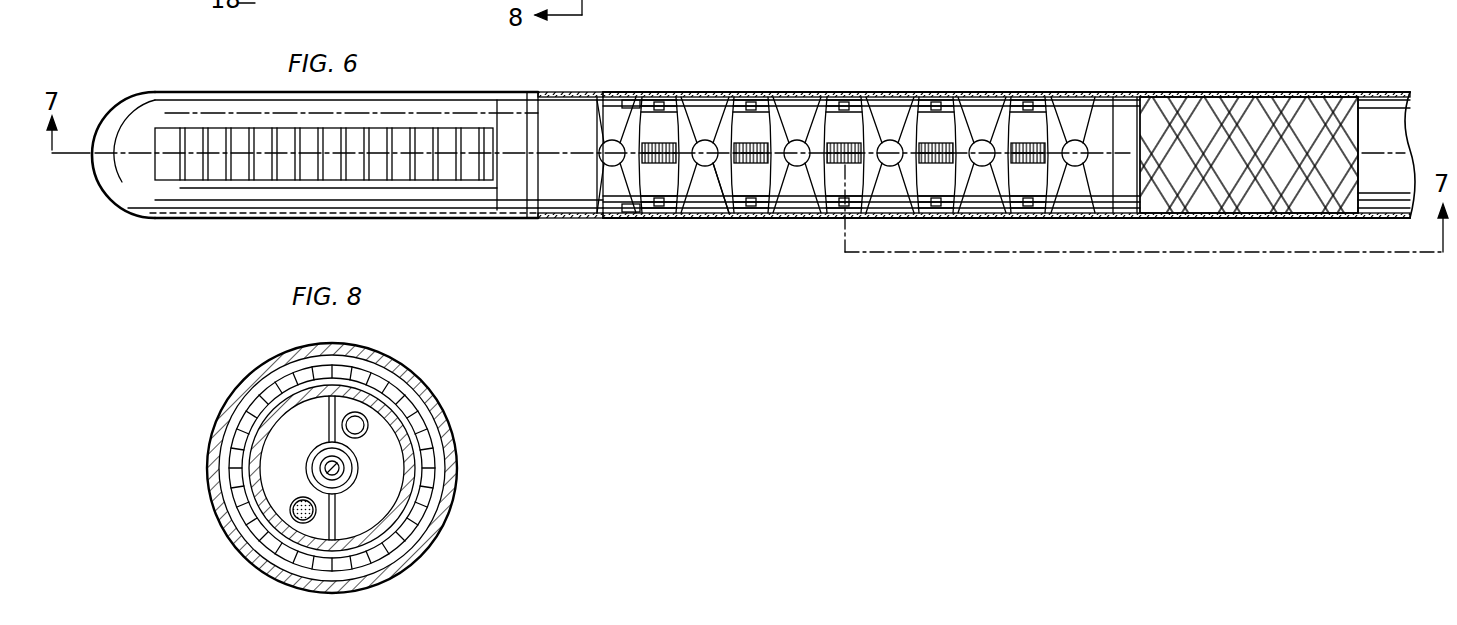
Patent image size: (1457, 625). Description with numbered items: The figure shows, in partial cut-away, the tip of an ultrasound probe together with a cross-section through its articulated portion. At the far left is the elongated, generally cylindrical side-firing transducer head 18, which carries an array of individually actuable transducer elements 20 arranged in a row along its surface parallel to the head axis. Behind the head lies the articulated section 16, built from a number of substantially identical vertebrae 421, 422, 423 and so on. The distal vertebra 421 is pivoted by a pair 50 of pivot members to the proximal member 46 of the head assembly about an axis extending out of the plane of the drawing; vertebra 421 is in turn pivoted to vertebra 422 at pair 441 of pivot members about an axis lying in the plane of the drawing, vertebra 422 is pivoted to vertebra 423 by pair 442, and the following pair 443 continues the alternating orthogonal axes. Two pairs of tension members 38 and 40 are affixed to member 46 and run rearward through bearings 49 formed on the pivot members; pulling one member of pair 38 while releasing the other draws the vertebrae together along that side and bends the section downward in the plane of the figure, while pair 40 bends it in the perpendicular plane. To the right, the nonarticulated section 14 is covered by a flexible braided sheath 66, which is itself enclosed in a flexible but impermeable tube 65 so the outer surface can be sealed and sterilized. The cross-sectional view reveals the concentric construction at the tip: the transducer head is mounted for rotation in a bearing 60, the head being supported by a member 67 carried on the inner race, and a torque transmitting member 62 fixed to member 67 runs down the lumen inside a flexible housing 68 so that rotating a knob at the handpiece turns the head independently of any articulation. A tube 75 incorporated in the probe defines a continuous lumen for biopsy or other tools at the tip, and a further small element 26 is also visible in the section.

In FIG. 6, the nonarticulated section 14 is at (1380, 226).
In FIG. 6, the articulated section 16 is at (659, 248).
In FIG. 6, the transducer head 18 is at (266, 231).
In FIG. 6, the transducer elements 20 is at (210, 128).
In FIG. 8, the cable 26 is at (294, 516).
In FIG. 6, the pair of tension members 38 is at (782, 96).
In FIG. 6, the pair of tension members 40 is at (850, 146).
In FIG. 6, the distal vertebra 421 is at (641, 96).
In FIG. 6, the vertebra 422 is at (679, 96).
In FIG. 6, the vertebra 423 is at (735, 96).
In FIG. 6, the pair of pivot members 441 is at (660, 96).
In FIG. 6, the pair of pivot members 442 is at (711, 96).
In FIG. 6, the pair of pivot members 443 is at (766, 96).
In FIG. 6, the proximal member 46 is at (549, 92).
In FIG. 8, the proximal member 46 is at (383, 364).
In FIG. 6, the bearings 49 is at (628, 100).
In FIG. 6, the pair of pivot members 50 is at (604, 148).
In FIG. 8, the bearing 60 is at (405, 398).
In FIG. 8, the torque transmitting member 62 is at (325, 463).
In FIG. 6, the impermeable tube 65 is at (995, 92).
In FIG. 6, the braided sheath 66 is at (1288, 190).
In FIG. 8, the supporting member 67 is at (310, 392).
In FIG. 6, the flexible housing 68 is at (746, 168).
In FIG. 8, the flexible housing 68 is at (352, 468).
In FIG. 8, the tube 75 is at (355, 412).